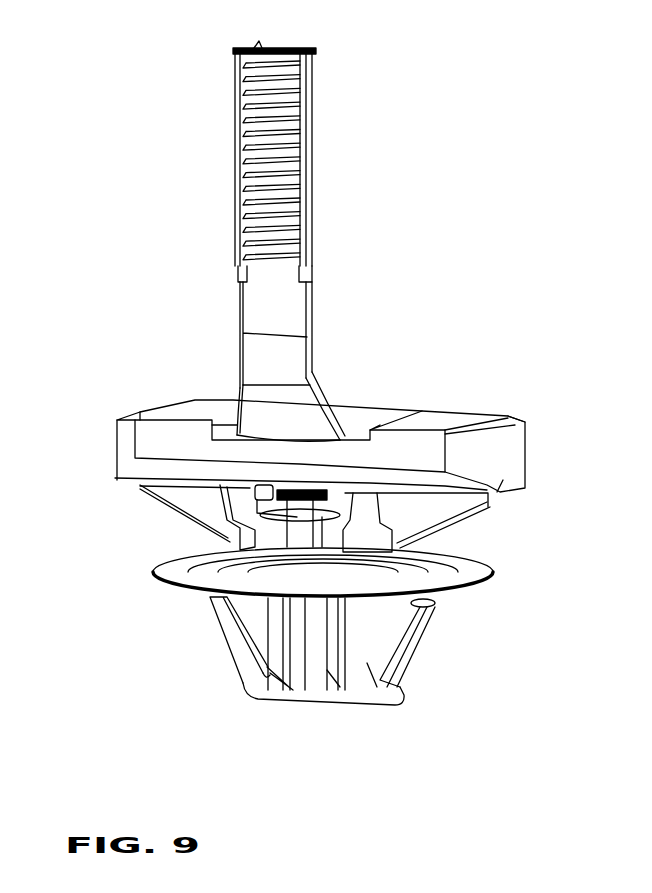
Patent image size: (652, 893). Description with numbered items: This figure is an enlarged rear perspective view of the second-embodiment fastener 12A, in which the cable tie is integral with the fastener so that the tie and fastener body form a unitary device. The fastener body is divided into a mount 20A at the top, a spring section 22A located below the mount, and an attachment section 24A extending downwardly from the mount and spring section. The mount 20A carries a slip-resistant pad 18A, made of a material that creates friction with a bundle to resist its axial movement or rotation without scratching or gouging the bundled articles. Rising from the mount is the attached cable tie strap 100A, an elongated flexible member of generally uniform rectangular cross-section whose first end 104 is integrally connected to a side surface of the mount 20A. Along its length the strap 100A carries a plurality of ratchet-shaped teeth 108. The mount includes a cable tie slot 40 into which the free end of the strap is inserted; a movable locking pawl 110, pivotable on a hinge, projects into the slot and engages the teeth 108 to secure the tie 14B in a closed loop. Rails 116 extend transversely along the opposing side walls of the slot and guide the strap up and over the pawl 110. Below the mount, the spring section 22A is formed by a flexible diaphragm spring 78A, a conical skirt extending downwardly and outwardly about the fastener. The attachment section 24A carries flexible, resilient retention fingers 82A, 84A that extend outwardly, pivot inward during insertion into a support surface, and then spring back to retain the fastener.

The fastener 12A is at (104, 237).
The ratchet-shaped teeth 108 is at (235, 190).
The cable tie strap 100A is at (308, 212).
The tie strap 14B is at (322, 313).
The first end 104 is at (290, 405).
The slip-resistant pad 18A is at (453, 407).
The mount 20A is at (93, 385).
The spring section 22A is at (93, 512).
The attachment section 24A is at (93, 578).
The cable tie slot 40 is at (228, 487).
The rails 116 is at (287, 511).
The diaphragm spring 78A is at (490, 572).
The locking pawl 110 is at (297, 500).
The retention finger 84A is at (222, 640).
The retention finger 82A is at (407, 643).